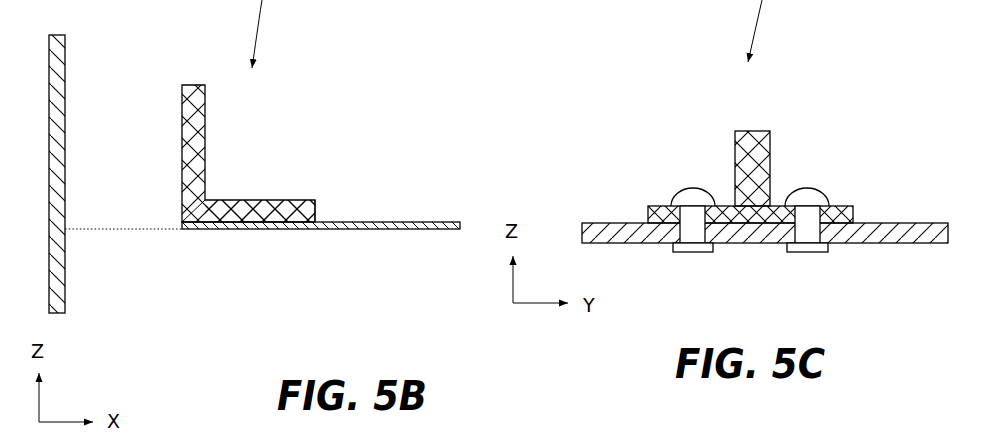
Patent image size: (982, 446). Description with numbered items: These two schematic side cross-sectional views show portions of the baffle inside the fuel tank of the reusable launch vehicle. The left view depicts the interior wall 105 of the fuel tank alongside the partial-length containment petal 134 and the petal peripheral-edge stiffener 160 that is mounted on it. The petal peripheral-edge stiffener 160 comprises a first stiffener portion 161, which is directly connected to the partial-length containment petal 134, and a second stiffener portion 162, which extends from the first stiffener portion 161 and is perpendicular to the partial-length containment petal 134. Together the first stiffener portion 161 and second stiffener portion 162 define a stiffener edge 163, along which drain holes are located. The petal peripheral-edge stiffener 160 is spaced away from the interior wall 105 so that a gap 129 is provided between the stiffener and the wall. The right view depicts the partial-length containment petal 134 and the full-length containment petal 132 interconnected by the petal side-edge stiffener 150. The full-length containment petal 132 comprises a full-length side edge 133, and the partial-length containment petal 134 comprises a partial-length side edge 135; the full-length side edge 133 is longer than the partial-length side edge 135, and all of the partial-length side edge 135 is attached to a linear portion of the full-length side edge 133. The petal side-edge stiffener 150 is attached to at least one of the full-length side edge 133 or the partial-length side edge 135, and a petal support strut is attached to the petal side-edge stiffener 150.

In FIG. 5B, the interior wall 105 is at (68, 72).
In FIG. 5B, the gap 129 is at (130, 238).
In FIG. 5C, the full-length containment petal 132 is at (853, 222).
In FIG. 5C, the full-length side edge 133 is at (773, 240).
In FIG. 5B, the partial-length containment petal 134 is at (388, 223).
In FIG. 5C, the partial-length containment petal 134 is at (592, 222).
In FIG. 5C, the partial-length side edge 135 is at (772, 190).
In FIG. 5C, the petal side-edge stiffener 150 is at (771, 133).
In FIG. 5B, the petal peripheral-edge stiffener 160 is at (266, 196).
In FIG. 5B, the first stiffener portion 161 is at (313, 200).
In FIG. 5B, the second stiffener portion 162 is at (195, 138).
In FIG. 5B, the stiffener edge 163 is at (182, 222).